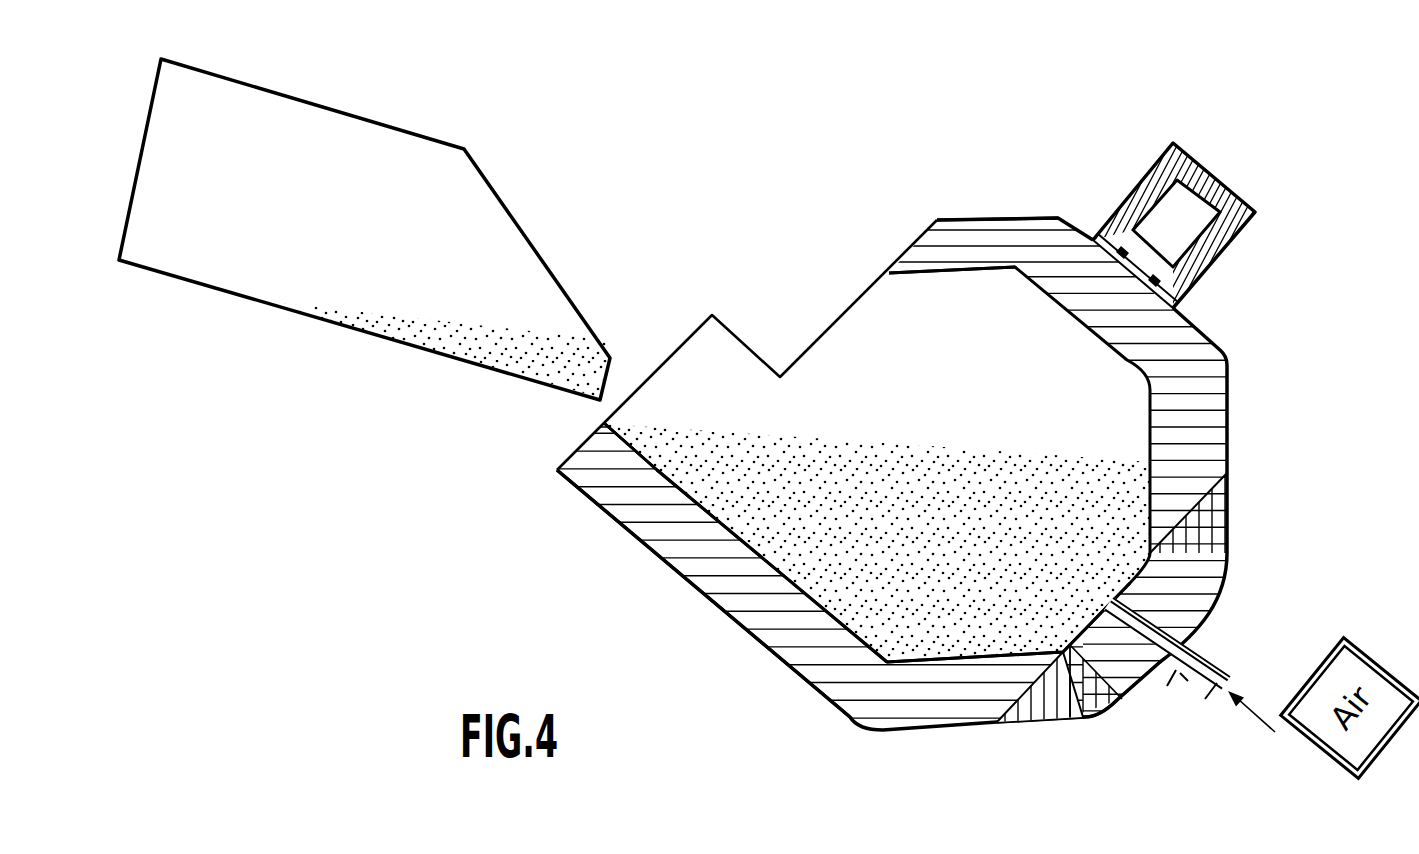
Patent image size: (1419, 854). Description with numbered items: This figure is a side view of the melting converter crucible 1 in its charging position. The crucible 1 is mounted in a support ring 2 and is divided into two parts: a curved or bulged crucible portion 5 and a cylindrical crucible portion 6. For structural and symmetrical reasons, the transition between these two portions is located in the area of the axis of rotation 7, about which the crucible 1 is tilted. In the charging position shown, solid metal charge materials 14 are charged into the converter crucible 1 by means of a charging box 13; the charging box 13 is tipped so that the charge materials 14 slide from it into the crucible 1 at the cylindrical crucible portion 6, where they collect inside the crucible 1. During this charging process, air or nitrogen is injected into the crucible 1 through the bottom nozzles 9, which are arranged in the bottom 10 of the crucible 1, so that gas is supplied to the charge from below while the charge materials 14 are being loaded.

The converter crucible 1 is at (1195, 412).
The support ring 2 is at (1213, 235).
The curved crucible portion 5 is at (1010, 237).
The cylindrical crucible portion 6 is at (752, 585).
The axis of rotation 7 is at (1128, 265).
The bottom nozzles 9 is at (1205, 687).
The bottom 10 is at (1183, 592).
The charging box 13 is at (421, 168).
The solid metal charge materials 14 is at (515, 353).